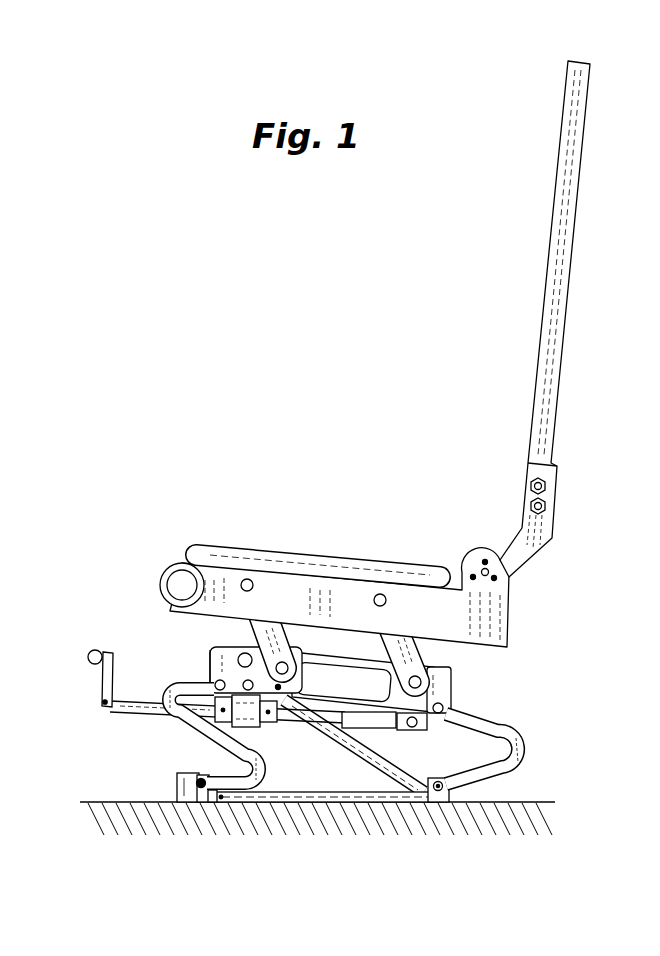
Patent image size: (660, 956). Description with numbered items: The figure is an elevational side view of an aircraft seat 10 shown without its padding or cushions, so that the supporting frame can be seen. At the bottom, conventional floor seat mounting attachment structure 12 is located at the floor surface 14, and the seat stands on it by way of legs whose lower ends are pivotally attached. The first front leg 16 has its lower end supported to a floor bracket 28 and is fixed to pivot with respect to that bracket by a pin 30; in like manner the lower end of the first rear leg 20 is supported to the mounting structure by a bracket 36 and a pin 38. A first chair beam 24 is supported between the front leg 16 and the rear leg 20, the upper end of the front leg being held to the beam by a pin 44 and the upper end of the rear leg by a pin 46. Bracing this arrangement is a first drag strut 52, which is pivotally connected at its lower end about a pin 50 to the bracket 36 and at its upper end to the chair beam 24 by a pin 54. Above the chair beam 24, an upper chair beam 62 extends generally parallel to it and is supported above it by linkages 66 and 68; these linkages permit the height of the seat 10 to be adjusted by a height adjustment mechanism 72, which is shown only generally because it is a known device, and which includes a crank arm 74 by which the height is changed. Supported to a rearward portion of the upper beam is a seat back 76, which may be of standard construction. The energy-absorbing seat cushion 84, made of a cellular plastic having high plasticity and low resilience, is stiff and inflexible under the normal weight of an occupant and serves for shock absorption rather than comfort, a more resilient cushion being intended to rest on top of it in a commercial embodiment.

The seat 10 is at (432, 437).
The floor seat mounting attachment structure 12 is at (524, 829).
The floor surface 14 is at (518, 801).
The first front leg 16 is at (198, 728).
The first rear leg 20 is at (498, 722).
The first chair beam 24 is at (437, 673).
The floor bracket 28 is at (176, 784).
The pin 30 is at (199, 789).
The bracket 36 is at (438, 803).
The pin 38 is at (437, 778).
The pin 44 is at (211, 680).
The pin 46 is at (451, 704).
The pin 50 is at (410, 801).
The first drag strut 52 is at (368, 754).
The pin 54 is at (276, 686).
The upper chair beam 62 is at (216, 592).
The linkage 66 is at (427, 642).
The linkage 68 is at (297, 628).
The height adjustment mechanism 72 is at (258, 722).
The crank arm 74 is at (102, 672).
The seat back 76 is at (541, 275).
The seat cushion 84 is at (356, 565).